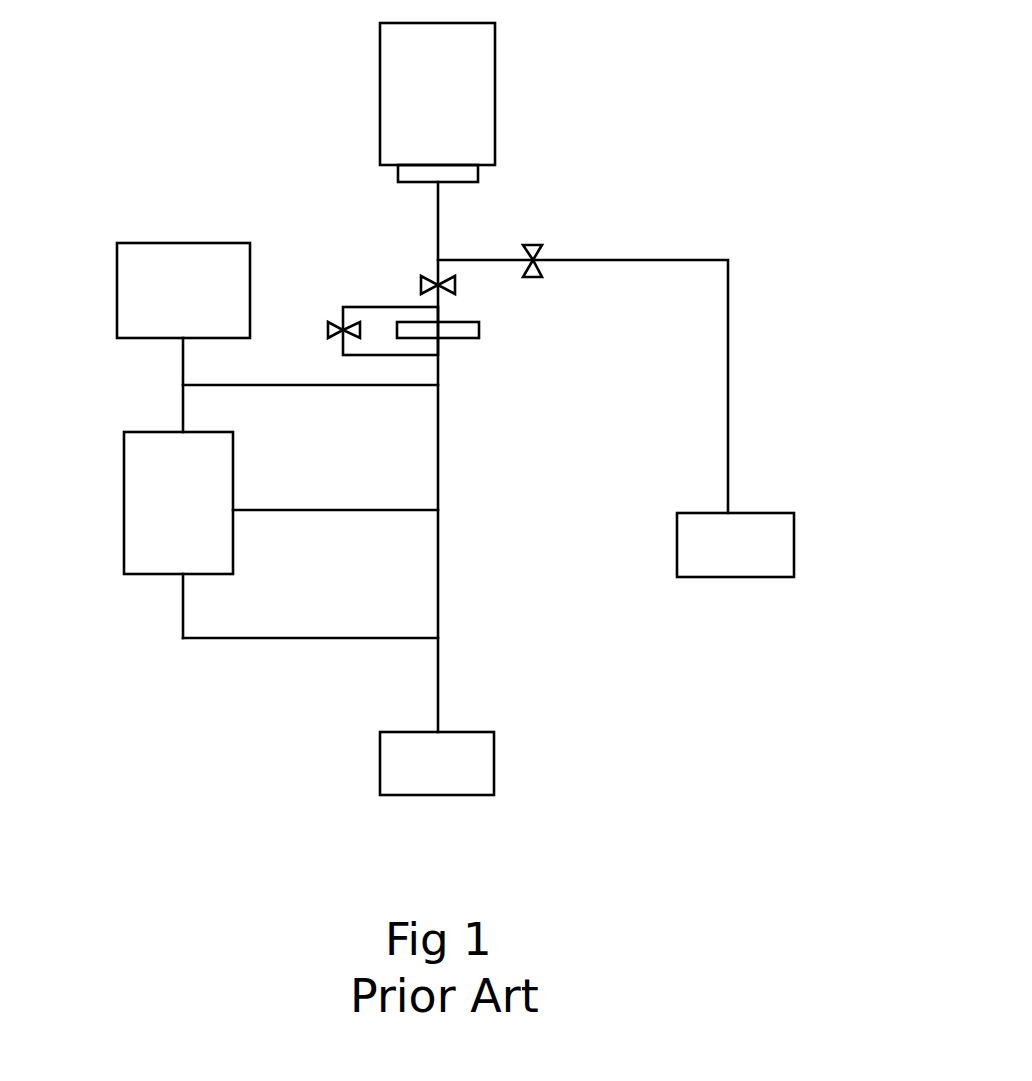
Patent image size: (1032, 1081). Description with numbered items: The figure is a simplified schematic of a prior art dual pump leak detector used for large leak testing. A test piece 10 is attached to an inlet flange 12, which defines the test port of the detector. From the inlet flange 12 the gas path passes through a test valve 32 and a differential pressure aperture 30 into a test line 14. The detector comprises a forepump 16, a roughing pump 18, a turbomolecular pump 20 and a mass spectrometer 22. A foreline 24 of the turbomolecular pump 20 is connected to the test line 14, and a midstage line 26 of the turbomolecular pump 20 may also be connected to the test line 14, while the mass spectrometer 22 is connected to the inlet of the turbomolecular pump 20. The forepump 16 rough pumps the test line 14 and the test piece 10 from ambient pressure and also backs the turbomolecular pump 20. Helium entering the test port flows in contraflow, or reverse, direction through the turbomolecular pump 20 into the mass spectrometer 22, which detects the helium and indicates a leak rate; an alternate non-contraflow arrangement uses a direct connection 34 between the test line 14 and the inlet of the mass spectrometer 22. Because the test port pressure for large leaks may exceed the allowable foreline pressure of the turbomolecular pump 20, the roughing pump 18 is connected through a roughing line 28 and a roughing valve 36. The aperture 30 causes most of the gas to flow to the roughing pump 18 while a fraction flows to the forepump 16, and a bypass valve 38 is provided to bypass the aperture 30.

The test piece 10 is at (360, 70).
The inlet flange 12 is at (503, 182).
The test line 14 is at (456, 575).
The forepump 16 is at (518, 763).
The roughing pump 18 is at (813, 547).
The turbomolecular pump 20 is at (100, 583).
The mass spectrometer 22 is at (84, 346).
The foreline 24 is at (263, 658).
The midstage line 26 is at (295, 530).
The roughing line 28 is at (750, 325).
The differential pressure aperture 30 is at (503, 325).
The test valve 32 is at (416, 260).
The direct connection 34 is at (328, 404).
The roughing valve 36 is at (581, 229).
The bypass valve 38 is at (322, 310).